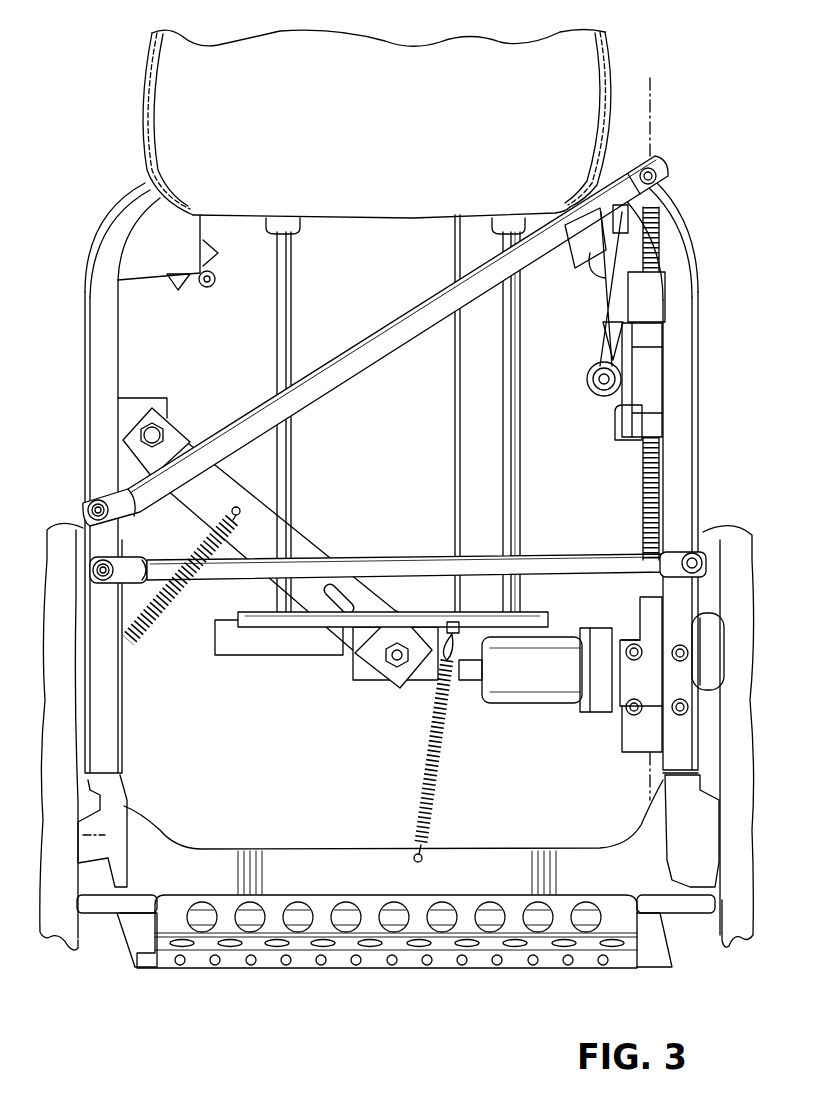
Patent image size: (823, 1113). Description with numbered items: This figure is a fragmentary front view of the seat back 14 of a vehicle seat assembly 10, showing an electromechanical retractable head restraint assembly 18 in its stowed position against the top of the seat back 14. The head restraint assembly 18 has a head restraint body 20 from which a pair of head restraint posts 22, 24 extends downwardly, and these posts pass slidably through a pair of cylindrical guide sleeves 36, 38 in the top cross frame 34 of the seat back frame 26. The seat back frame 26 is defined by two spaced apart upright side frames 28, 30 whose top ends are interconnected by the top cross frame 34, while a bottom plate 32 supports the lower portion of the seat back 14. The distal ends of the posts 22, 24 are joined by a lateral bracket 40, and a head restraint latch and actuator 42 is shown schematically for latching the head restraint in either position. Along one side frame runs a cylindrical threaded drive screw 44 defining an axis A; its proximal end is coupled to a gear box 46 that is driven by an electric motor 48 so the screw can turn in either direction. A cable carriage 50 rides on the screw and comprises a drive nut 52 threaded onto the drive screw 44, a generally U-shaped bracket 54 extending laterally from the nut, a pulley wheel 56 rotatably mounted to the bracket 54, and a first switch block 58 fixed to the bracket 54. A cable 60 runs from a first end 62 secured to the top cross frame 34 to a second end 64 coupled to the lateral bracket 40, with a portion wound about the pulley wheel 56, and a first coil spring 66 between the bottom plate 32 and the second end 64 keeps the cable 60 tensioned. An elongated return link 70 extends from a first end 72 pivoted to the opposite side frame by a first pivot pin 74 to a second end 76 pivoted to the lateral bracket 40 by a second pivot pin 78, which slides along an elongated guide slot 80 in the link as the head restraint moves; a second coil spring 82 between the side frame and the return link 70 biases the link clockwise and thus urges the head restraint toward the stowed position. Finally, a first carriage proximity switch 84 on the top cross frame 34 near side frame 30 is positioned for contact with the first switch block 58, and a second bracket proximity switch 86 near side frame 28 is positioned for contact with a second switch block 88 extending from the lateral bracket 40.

The seat assembly 10 is at (686, 78).
The axis A is at (656, 100).
The seat back 14 is at (385, 443).
The head restraint assembly 18 is at (336, 111).
The head restraint body 20 is at (392, 88).
The head restraint post 22 is at (321, 415).
The head restraint post 24 is at (498, 415).
The seat back frame 26 is at (83, 458).
The side frame 28 is at (97, 328).
The side frame 30 is at (685, 495).
The bottom plate 32 is at (185, 862).
The top cross frame 34 is at (140, 185).
The guide sleeve 36 is at (300, 222).
The guide sleeve 38 is at (492, 219).
The lateral bracket 40 is at (302, 622).
The head restraint latch and actuator 42 is at (700, 825).
The drive screw 44 is at (659, 463).
The gear box 46 is at (620, 688).
The electric motor 48 is at (512, 690).
The cable carriage 50 is at (643, 363).
The drive nut 52 is at (652, 377).
The U-shaped bracket 54 is at (622, 408).
The pulley wheel 56 is at (599, 400).
The first switch block 58 is at (605, 322).
The cable 60 is at (455, 426).
The first end 62 is at (627, 217).
The second end 64 is at (452, 624).
The first coil spring 66 is at (415, 775).
The return link 70 is at (278, 548).
The first end 72 is at (165, 409).
The first pivot pin 74 is at (156, 433).
The second end 76 is at (390, 678).
The second pivot pin 78 is at (397, 656).
The guide slot 80 is at (345, 603).
The second coil spring 82 is at (172, 612).
The first carriage proximity switch 84 is at (612, 166).
The second bracket proximity switch 86 is at (212, 240).
The second switch block 88 is at (235, 642).